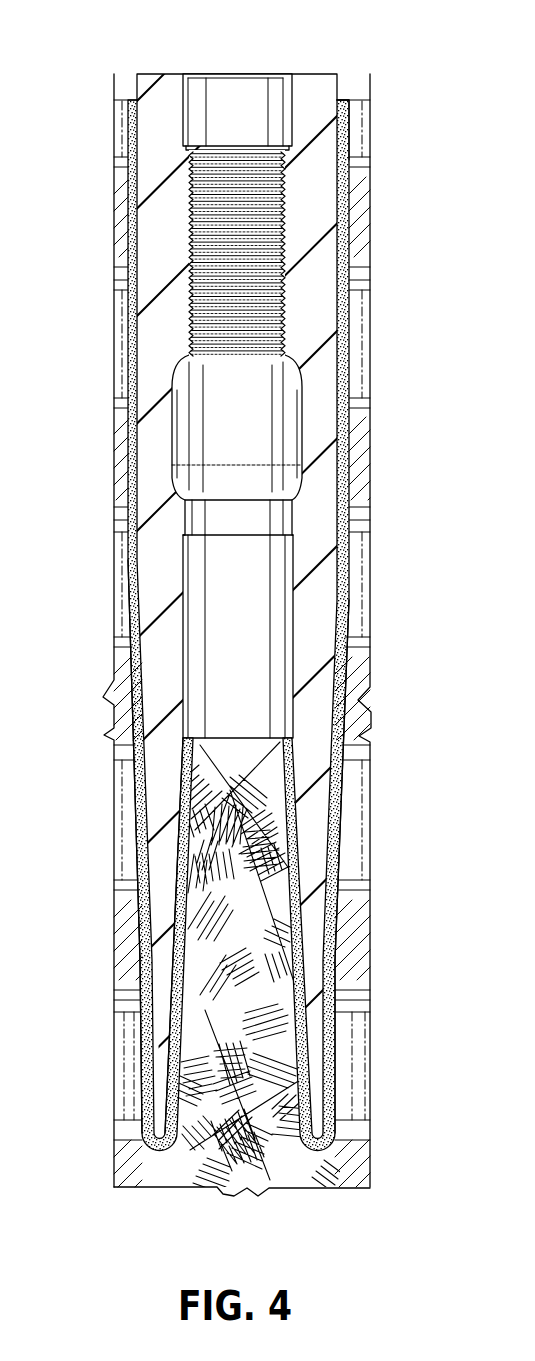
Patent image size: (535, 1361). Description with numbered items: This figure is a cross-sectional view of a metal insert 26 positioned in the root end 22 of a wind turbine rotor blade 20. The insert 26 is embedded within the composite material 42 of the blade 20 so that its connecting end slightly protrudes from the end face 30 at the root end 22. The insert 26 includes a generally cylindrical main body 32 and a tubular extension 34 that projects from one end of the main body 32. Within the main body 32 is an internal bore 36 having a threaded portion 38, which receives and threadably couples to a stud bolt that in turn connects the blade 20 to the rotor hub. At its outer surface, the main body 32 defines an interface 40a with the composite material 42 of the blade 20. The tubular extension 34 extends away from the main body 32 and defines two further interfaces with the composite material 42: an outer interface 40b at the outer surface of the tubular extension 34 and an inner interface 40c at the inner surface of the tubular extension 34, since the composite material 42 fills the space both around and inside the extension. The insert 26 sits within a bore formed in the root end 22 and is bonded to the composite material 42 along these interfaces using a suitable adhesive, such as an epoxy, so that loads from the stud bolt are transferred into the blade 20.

The rotor blade 20 is at (361, 1171).
The root end 22 is at (118, 147).
The insert 26 is at (150, 66).
The end face 30 is at (349, 100).
The main body 32 is at (349, 478).
The tubular extension 34 is at (157, 973).
The internal bore 36 is at (189, 76).
The threaded portion 38 is at (286, 209).
The interface 40a is at (128, 362).
The outer interface 40b is at (141, 900).
The inner interface 40c is at (272, 963).
The composite material 42 is at (355, 1043).